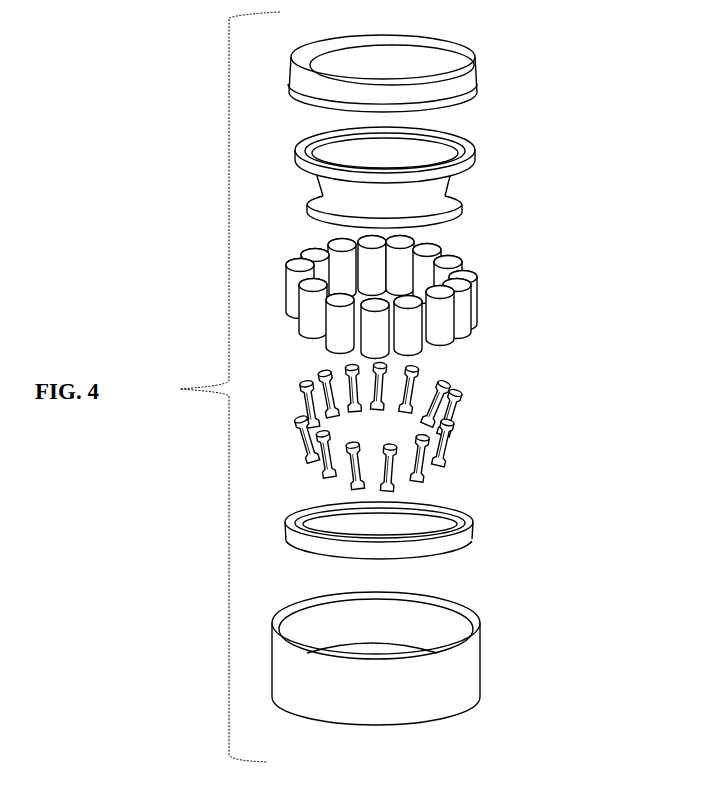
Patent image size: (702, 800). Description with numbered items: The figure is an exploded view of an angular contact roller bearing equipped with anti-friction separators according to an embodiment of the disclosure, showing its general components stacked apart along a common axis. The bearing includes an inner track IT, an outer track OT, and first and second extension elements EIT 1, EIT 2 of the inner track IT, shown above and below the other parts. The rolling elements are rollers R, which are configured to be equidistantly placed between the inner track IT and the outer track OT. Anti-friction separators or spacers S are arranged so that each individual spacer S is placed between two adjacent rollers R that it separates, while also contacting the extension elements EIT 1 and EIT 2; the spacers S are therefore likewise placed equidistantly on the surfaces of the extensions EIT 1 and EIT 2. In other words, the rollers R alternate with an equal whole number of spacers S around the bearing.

The first extension element of the inner track EIT 1 is at (431, 73).
The inner track IT is at (425, 177).
The rollers R is at (419, 297).
The anti-friction separators or spacers S is at (424, 426).
The second extension element of the inner track EIT 2 is at (434, 530).
The outer track OT is at (420, 658).